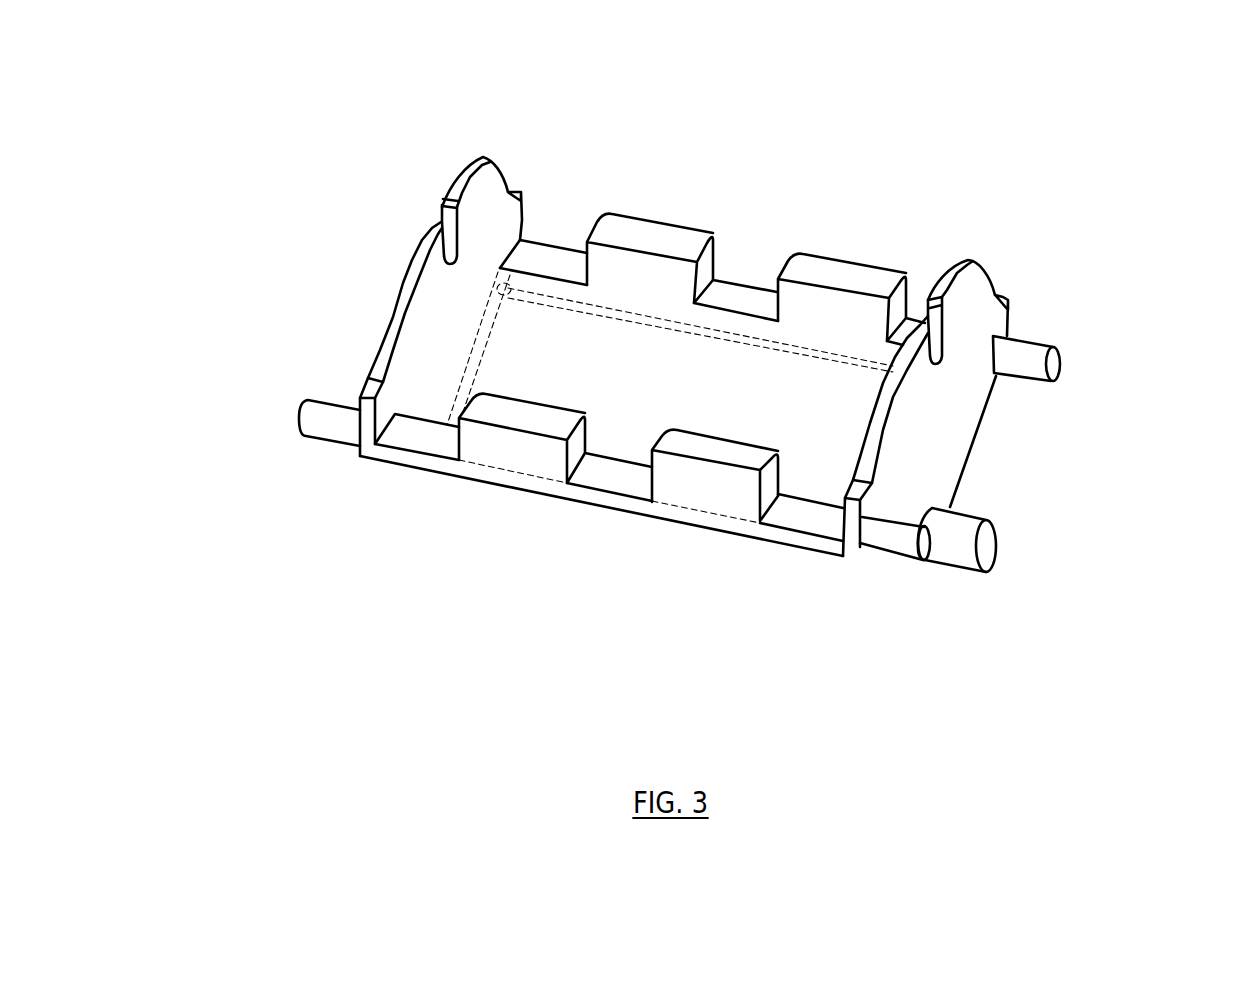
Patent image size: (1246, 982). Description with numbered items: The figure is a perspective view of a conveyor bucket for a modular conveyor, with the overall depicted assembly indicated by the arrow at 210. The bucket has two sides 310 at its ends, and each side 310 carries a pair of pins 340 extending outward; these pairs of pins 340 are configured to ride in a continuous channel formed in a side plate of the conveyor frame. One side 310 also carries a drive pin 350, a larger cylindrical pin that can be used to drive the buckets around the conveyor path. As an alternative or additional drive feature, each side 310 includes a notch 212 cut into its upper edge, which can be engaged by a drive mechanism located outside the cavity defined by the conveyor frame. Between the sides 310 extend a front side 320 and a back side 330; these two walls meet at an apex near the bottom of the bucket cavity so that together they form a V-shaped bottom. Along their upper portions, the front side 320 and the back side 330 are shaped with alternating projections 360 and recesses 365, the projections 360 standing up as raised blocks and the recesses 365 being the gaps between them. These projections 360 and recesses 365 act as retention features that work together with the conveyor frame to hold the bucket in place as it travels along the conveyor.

The carrier assembly 210 is at (242, 124).
The notch 212 is at (440, 223).
The side 310 is at (418, 341).
The front side 320 is at (515, 488).
The back side 330 is at (578, 360).
The pin 340 is at (1050, 372).
The drive pin 350 is at (967, 545).
The projection 360 is at (855, 280).
The recess 365 is at (560, 237).